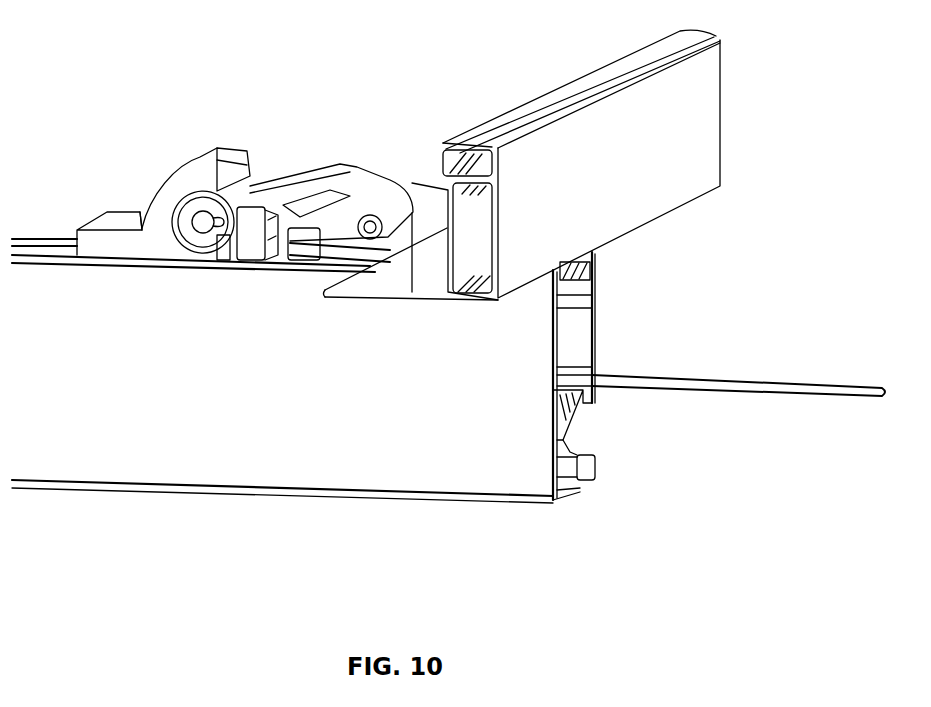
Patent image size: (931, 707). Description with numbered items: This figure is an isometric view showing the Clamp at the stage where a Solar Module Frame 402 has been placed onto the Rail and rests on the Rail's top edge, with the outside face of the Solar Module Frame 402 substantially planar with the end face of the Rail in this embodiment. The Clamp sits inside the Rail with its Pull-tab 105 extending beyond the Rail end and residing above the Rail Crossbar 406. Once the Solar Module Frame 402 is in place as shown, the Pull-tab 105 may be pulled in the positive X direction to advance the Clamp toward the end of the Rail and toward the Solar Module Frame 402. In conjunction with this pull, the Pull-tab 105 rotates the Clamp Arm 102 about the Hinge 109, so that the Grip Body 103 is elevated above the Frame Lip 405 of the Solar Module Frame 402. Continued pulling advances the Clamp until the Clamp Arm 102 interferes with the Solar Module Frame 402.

The Clamp Arm 102 is at (303, 145).
The Grip Body 103 is at (360, 254).
The Pull-tab 105 is at (734, 416).
The Hinge 109 is at (171, 179).
The Solar Module Frame 402 is at (685, 238).
The Frame Lip 405 is at (415, 267).
The Rail Crossbar 406 is at (571, 460).